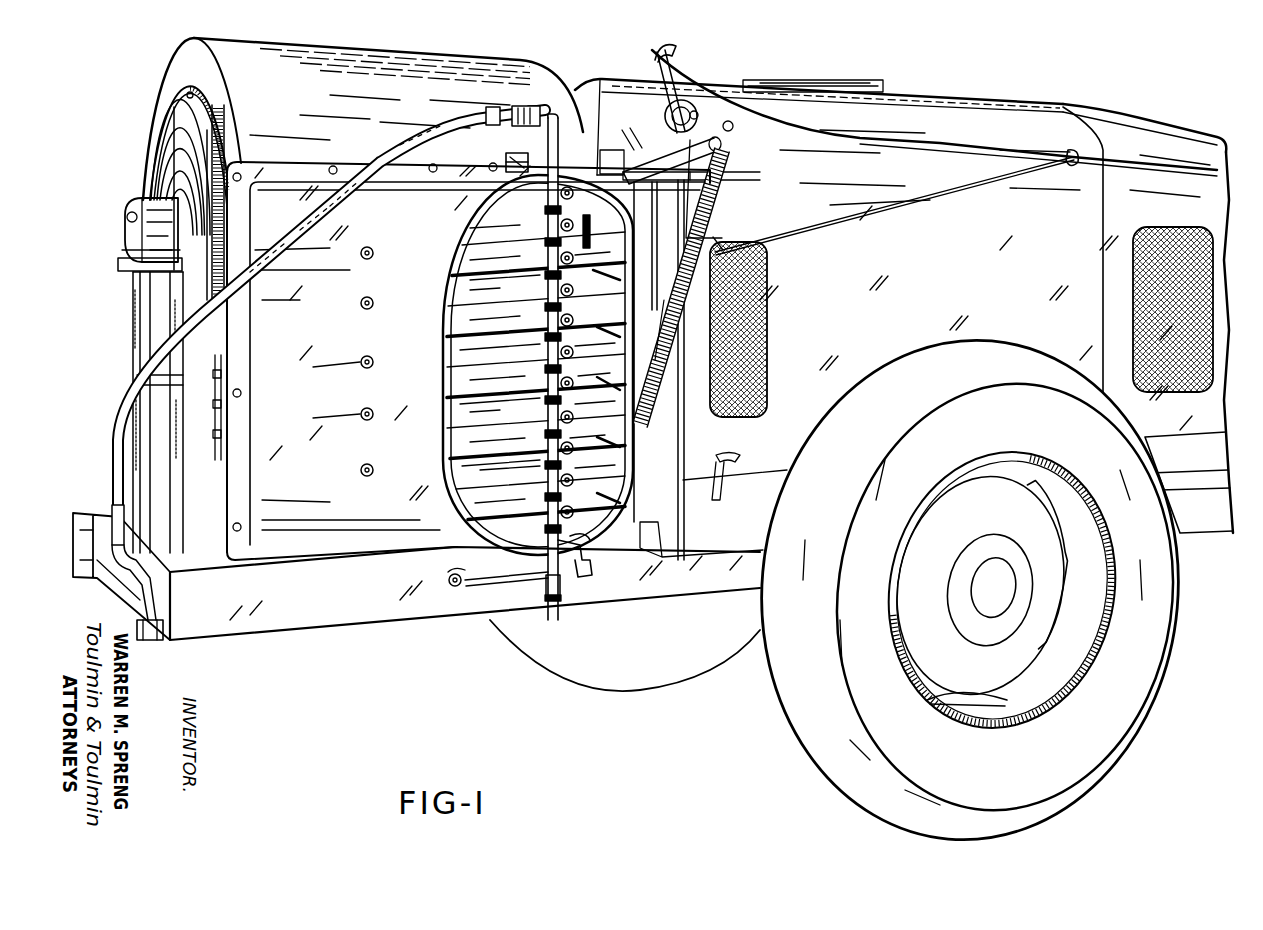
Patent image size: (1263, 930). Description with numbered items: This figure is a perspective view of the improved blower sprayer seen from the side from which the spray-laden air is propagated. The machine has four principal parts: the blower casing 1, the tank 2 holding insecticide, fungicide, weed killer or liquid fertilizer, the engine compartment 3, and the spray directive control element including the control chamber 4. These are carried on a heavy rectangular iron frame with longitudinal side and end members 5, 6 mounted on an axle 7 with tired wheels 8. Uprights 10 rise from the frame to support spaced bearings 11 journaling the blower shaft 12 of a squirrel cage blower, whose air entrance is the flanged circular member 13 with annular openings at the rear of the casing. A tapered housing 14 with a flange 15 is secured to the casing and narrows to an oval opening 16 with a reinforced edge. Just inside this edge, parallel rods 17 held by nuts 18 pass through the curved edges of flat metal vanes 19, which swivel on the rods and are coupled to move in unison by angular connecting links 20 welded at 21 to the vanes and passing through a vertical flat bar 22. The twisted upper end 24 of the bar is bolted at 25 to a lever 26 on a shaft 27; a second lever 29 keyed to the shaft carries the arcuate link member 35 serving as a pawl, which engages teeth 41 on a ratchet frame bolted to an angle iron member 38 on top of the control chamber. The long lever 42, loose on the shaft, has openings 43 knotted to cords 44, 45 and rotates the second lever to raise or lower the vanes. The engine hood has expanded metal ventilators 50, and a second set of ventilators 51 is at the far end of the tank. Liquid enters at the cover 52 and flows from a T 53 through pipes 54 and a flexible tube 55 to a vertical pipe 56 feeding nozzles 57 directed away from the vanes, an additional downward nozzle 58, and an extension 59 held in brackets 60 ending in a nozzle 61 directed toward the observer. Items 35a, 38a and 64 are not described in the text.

The blower casing 1 is at (491, 51).
The tank 2 is at (1018, 97).
The engine compartment 3 is at (1137, 118).
The control chamber 4 is at (361, 388).
The longitudinal side members 5 is at (244, 630).
The end members 6 is at (105, 572).
The axle 7 is at (1003, 625).
The tired wheels 8 is at (636, 686).
The uprights 10 is at (147, 317).
The bearings 11 is at (122, 246).
The blower shaft 12 is at (128, 214).
The flanged circular member 13 is at (158, 128).
The tapered housing 14 is at (293, 519).
The flange 15 is at (290, 165).
The oval opening 16 is at (490, 524).
The rods 17 is at (358, 256).
The nuts 18 is at (372, 306).
The vanes 19 is at (509, 337).
The connecting link 20 is at (604, 386).
The weld 21 is at (594, 299).
The vertical flat bar 22 is at (646, 452).
The twisted upper end 24 is at (612, 170).
The bolt 25 is at (613, 144).
The lever 26 is at (656, 183).
The shaft 27 is at (723, 144).
The second lever 29 is at (698, 117).
The link member 35 is at (670, 124).
The link 35a is at (730, 126).
The angle iron member 38 is at (506, 158).
The clamp bolt 38a is at (520, 158).
The teeth 41 is at (672, 143).
The long lever 42 is at (652, 76).
The openings 43 is at (660, 39).
The cord 44 is at (856, 128).
The cord 45 is at (930, 206).
The expanded metal ventilators 50 is at (1203, 330).
The ventilators 51 is at (768, 352).
The cover 52 is at (860, 76).
The T coupling 53 is at (152, 641).
The pipes 54 is at (138, 590).
The flexible tube 55 is at (273, 262).
The vertical pipe 56 is at (554, 363).
The nozzles 57 is at (554, 193).
The additional nozzle 58 is at (584, 562).
The extension 59 is at (530, 588).
The brackets 60 is at (506, 588).
The nozzle 61 is at (455, 580).
The hose guide 64 is at (673, 360).